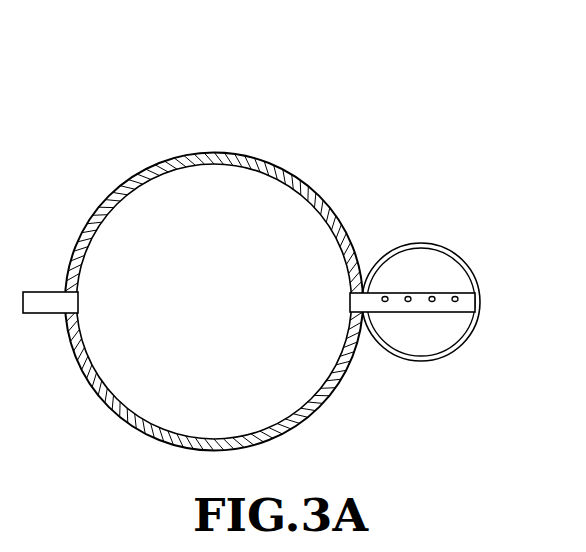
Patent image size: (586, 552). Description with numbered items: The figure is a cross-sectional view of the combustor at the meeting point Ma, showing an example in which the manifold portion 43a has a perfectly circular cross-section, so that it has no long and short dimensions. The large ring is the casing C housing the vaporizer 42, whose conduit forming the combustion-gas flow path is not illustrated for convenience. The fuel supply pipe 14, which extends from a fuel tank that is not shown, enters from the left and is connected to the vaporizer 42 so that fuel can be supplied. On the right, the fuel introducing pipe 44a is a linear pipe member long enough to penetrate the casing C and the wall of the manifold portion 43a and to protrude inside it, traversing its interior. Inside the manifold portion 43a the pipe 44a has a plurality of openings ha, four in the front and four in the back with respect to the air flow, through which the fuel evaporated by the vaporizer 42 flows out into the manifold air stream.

The vaporizer 42 is at (237, 155).
The manifold portion 43a is at (430, 245).
The fuel introducing pipe 44a is at (475, 293).
The openings ha is at (408, 296).
The fuel supply pipe 14 is at (50, 314).
The meeting point Ma is at (480, 116).